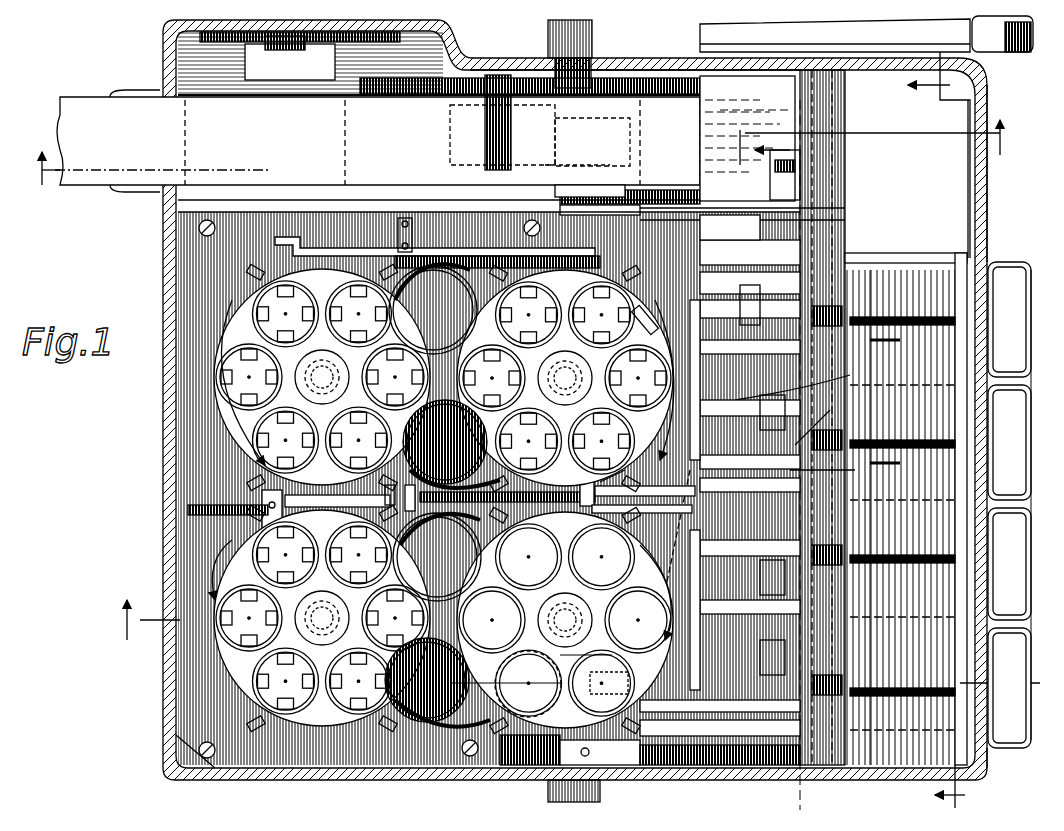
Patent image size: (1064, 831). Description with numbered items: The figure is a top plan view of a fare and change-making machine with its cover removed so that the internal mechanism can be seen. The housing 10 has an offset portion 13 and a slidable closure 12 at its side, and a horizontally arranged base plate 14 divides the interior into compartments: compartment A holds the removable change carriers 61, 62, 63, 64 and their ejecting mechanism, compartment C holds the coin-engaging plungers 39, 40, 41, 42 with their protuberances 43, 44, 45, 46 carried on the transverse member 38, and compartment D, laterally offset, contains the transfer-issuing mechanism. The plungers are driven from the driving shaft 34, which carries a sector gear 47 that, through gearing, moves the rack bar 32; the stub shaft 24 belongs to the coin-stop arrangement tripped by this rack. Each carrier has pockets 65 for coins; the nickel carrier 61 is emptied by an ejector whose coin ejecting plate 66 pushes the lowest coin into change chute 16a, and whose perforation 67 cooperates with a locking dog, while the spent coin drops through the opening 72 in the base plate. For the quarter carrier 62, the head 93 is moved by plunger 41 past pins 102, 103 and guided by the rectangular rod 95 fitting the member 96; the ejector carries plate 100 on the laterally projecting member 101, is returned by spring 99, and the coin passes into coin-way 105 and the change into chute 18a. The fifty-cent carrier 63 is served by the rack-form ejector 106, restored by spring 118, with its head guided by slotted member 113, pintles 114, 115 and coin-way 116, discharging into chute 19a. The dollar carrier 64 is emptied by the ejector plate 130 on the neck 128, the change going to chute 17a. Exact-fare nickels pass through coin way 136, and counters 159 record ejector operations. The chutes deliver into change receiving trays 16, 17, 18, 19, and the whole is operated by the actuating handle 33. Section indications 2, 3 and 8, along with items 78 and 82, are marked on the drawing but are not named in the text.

The housing 10 is at (473, 64).
The base plate 14 is at (195, 460).
The driving shaft 34 is at (600, 162).
The compartment D is at (747, 138).
The slidable closure 12 is at (830, 150).
The stub shaft 24 is at (805, 170).
The slotted member 113 is at (790, 262).
The rack bar 32 is at (900, 258).
The offset portion 13 is at (978, 228).
The actuating handle 33 is at (990, 46).
The section line 3 is at (960, 410).
The section line 8 is at (519, 152).
The section line 2 is at (570, 651).
The change receiving tray 19 is at (1009, 319).
The change receiving tray 18 is at (1009, 442).
The change receiving tray 17 is at (1009, 564).
The change receiving tray 16 is at (200, 320).
The compartment C is at (902, 517).
The coin-engaging plunger 42 is at (905, 318).
The coin-engaging plunger 41 is at (875, 442).
The coin-engaging plunger 40 is at (912, 558).
The coin-engaging plunger 39 is at (900, 690).
The transverse member 38 is at (955, 342).
The protuberance 46 is at (835, 305).
The protuberance 45 is at (840, 432).
The protuberance 44 is at (840, 548).
The protuberance 43 is at (840, 678).
The head 93 is at (817, 426).
The pin 102 is at (813, 374).
The pin 103 is at (842, 470).
The pintle 115 is at (750, 298).
The pintle 114 is at (712, 352).
The coin-way 105 is at (720, 410).
The member 96 is at (740, 480).
The coin way 136 is at (750, 567).
The counter 159 is at (765, 595).
The opening 72 is at (720, 714).
The plate 100 is at (675, 480).
The rectangular rod 95 is at (672, 547).
The ejector 106 is at (440, 240).
The spring 118 is at (495, 258).
The ejector plate 130 is at (326, 510).
The neck portion 128 is at (250, 498).
The spring 78 is at (500, 504).
The sector gear 47 is at (392, 496).
The change carrier 61 is at (600, 505).
The spring 99 is at (581, 502).
The laterally projecting member 101 is at (607, 483).
The bar 82 is at (642, 515).
The change carrier 63 is at (240, 300).
The change carrier 62 is at (648, 318).
The pocket 65 is at (567, 474).
The coin-way 116 is at (665, 319).
The change carrier 64 is at (340, 718).
The compartment A is at (210, 698).
The coin ejecting plate 66 is at (561, 620).
The perforation 67 is at (528, 684).
The change chute 19a is at (433, 309).
The change chute 18a is at (451, 444).
The change chute 17a is at (437, 557).
The change chute 16a is at (420, 722).